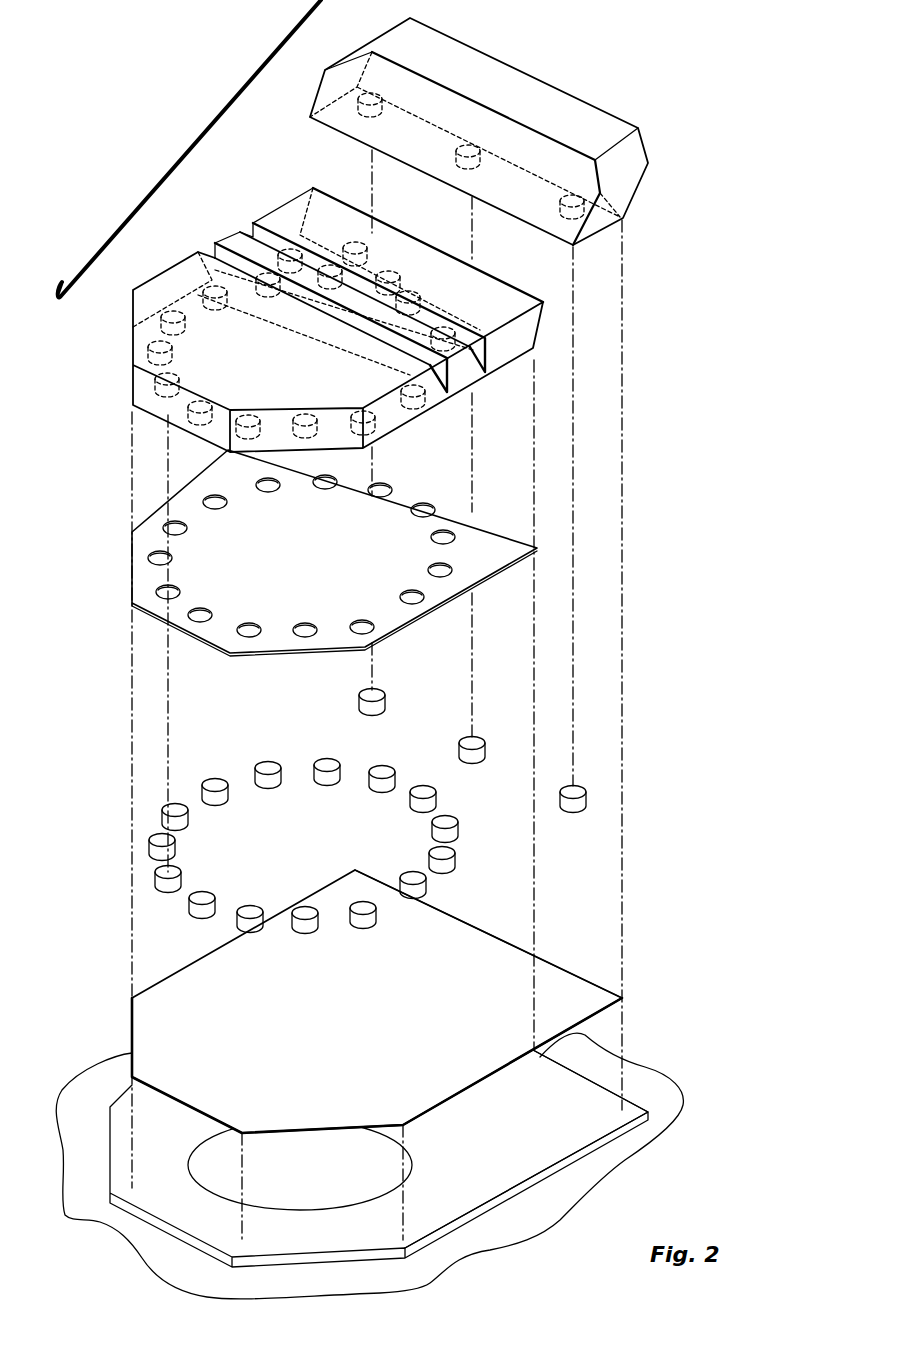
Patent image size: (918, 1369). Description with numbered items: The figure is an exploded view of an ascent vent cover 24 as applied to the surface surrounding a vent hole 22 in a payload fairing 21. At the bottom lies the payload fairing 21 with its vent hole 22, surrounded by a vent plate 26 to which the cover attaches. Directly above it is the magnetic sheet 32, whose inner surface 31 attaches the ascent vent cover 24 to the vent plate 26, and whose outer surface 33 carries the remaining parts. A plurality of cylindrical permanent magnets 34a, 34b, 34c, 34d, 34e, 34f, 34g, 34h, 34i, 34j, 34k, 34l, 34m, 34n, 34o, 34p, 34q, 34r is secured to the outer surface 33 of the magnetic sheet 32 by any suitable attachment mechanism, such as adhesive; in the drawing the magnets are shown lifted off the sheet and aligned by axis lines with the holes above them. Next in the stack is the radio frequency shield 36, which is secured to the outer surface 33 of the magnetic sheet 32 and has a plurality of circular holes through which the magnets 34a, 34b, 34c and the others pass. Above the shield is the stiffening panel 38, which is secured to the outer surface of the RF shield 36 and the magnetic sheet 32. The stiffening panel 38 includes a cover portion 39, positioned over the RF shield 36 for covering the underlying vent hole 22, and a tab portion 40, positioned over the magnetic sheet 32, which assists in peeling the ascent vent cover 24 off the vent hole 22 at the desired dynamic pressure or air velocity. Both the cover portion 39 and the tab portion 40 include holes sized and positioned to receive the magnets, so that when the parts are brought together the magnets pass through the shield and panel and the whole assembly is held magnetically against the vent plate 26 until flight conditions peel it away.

The payload fairing 21 is at (590, 1170).
The vent hole 22 is at (310, 1177).
The ascent vent cover 24 is at (714, 539).
The vent plate 26 is at (482, 1168).
The inner surface 31 is at (482, 1090).
The magnetic sheet 32 is at (110, 1012).
The outer surface 33 is at (490, 1018).
The cylindrical permanent magnet 34a is at (158, 880).
The cylindrical permanent magnet 34b is at (194, 906).
The cylindrical permanent magnet 34c is at (242, 914).
The cylindrical permanent magnet 34d is at (303, 920).
The cylindrical permanent magnet 34e is at (368, 918).
The cylindrical permanent magnet 34f is at (426, 888).
The cylindrical permanent magnet 34g is at (454, 860).
The cylindrical permanent magnet 34h is at (457, 830).
The cylindrical permanent magnet 34i is at (434, 802).
The cylindrical permanent magnet 34j is at (384, 785).
The cylindrical permanent magnet 34k is at (327, 778).
The cylindrical permanent magnet 34l is at (268, 780).
The cylindrical permanent magnet 34m is at (203, 790).
The cylindrical permanent magnet 34n is at (163, 818).
The cylindrical permanent magnet 34o is at (150, 843).
The cylindrical permanent magnet 34p is at (578, 805).
The cylindrical permanent magnet 34q is at (473, 757).
The cylindrical permanent magnet 34r is at (377, 708).
The radio frequency (RF) shield 36 is at (140, 565).
The stiffening panel 38 is at (212, 123).
The cover portion 39 is at (185, 285).
The tab portion 40 is at (402, 50).